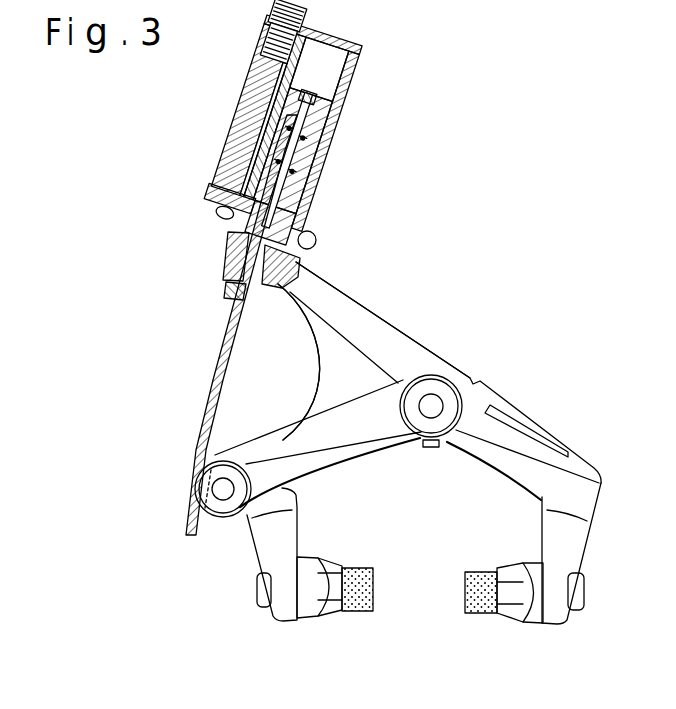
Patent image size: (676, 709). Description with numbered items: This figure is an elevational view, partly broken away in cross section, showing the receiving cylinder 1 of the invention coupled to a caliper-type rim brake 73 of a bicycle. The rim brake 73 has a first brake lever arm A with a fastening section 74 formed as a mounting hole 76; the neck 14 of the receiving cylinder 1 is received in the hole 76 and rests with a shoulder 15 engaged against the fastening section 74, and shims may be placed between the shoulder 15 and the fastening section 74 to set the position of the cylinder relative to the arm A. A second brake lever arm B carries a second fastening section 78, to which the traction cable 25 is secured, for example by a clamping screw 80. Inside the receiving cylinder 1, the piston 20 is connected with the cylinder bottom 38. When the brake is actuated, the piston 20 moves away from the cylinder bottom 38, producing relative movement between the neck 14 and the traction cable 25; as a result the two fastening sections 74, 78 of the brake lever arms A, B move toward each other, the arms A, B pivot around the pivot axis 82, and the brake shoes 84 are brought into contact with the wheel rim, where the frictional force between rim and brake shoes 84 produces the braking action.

The receiving cylinder 1 is at (373, 62).
The piston 20 is at (330, 118).
The cylinder bottom 38 is at (204, 195).
The mounting hole 76 is at (230, 250).
The fastening section 74 is at (227, 270).
The neck 14 is at (230, 290).
The shoulder 15 is at (292, 207).
The traction cable 25 is at (213, 404).
The caliper-type rim brake 73 is at (530, 360).
The first brake lever arm A is at (357, 327).
The second brake lever arm B is at (260, 462).
The pivot axis 82 is at (431, 405).
The clamping screw 80 is at (200, 493).
The second fastening section 78 is at (223, 523).
The brake shoes 84 is at (373, 593).